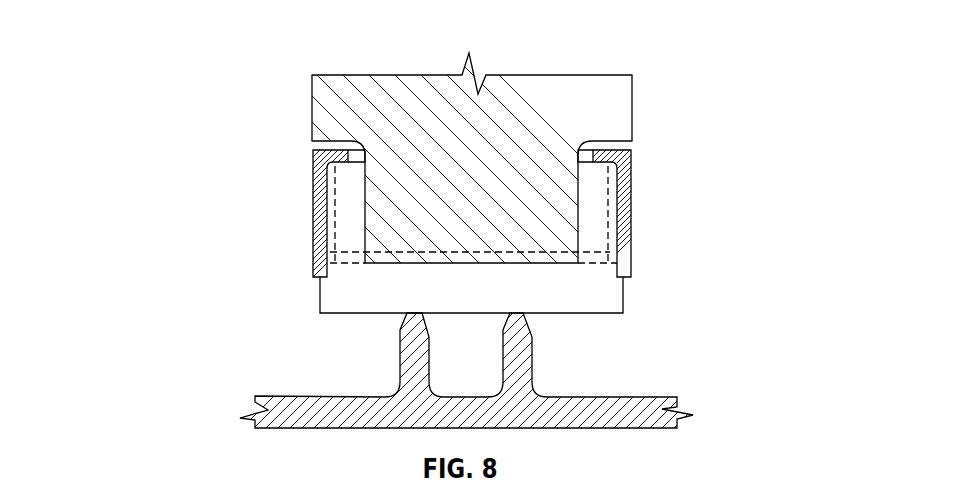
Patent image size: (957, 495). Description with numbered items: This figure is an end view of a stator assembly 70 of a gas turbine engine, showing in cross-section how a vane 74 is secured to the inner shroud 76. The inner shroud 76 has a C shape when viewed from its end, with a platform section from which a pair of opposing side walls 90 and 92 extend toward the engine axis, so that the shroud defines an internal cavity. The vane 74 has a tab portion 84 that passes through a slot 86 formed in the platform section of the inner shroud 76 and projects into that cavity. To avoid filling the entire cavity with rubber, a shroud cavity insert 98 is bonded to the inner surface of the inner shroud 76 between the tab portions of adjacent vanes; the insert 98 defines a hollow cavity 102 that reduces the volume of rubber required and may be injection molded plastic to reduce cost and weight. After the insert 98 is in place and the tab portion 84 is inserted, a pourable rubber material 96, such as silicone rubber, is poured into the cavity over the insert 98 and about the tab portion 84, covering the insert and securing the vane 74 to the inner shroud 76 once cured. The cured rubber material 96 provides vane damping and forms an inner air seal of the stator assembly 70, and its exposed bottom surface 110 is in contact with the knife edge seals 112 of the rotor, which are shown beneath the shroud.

The stator assembly 70 is at (289, 34).
The vane 74 is at (461, 128).
The inner shroud 76 is at (312, 152).
The tab portion 84 is at (469, 226).
The slot 86 is at (358, 158).
The side wall 90 is at (313, 272).
The side wall 92 is at (631, 233).
The rubber material 96 is at (340, 283).
The shroud cavity insert 98 is at (335, 195).
The hollow cavity 102 is at (335, 216).
The exposed bottom surface 110 is at (365, 318).
The knife edge seal 112 is at (428, 338).